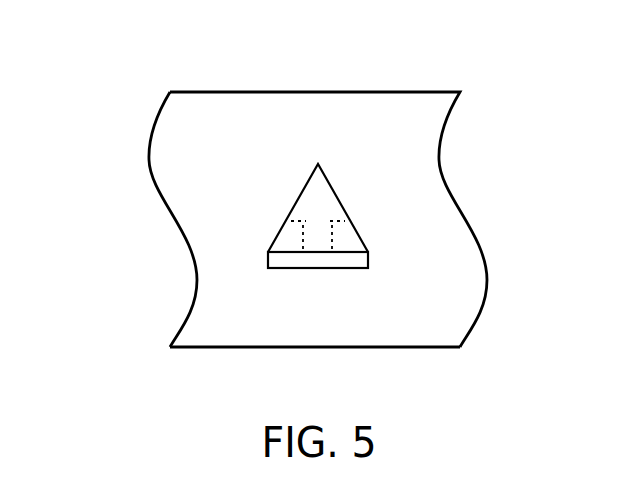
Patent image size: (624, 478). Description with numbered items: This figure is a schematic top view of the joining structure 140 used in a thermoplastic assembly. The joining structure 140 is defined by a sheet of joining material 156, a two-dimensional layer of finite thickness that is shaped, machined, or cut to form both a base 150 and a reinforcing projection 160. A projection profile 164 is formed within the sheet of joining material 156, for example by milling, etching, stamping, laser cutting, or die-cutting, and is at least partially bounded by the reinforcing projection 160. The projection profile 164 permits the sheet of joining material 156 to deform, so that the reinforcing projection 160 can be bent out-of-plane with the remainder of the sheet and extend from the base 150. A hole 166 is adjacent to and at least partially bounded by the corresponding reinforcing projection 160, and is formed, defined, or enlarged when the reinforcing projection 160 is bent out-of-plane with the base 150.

The joining structure 140 is at (263, 246).
The base 150 is at (252, 318).
The sheet of joining material 156 is at (380, 347).
The reinforcing projection 160 is at (315, 188).
The projection profile 164 is at (343, 213).
The hole 166 is at (317, 242).